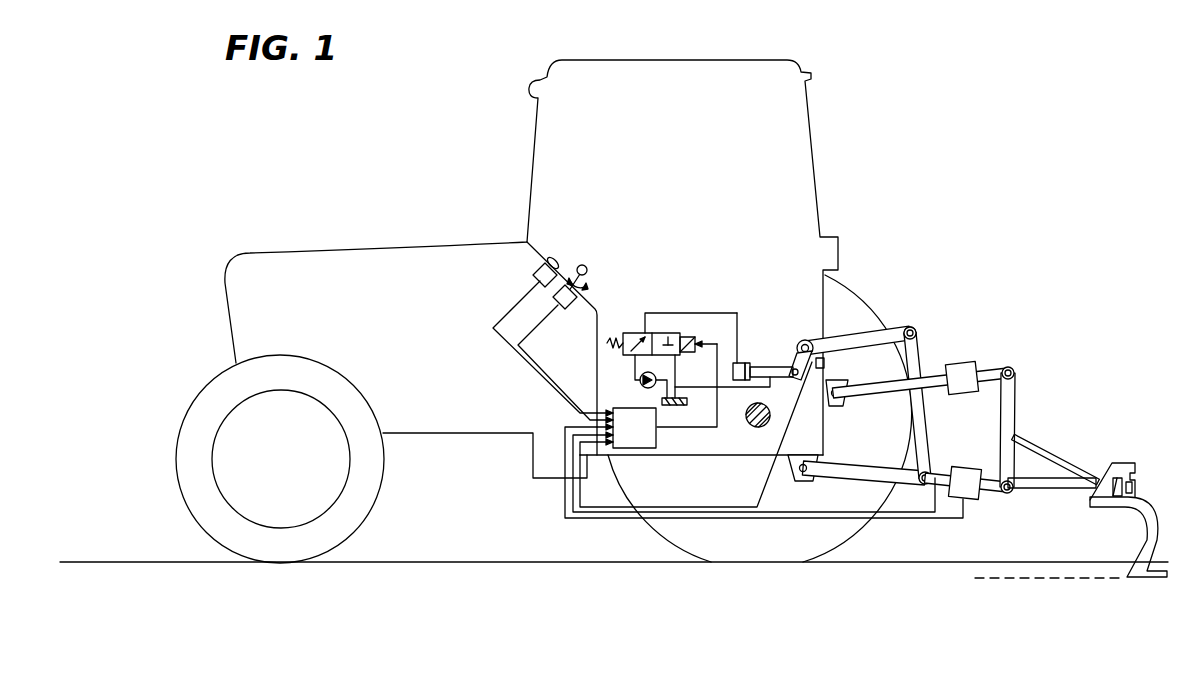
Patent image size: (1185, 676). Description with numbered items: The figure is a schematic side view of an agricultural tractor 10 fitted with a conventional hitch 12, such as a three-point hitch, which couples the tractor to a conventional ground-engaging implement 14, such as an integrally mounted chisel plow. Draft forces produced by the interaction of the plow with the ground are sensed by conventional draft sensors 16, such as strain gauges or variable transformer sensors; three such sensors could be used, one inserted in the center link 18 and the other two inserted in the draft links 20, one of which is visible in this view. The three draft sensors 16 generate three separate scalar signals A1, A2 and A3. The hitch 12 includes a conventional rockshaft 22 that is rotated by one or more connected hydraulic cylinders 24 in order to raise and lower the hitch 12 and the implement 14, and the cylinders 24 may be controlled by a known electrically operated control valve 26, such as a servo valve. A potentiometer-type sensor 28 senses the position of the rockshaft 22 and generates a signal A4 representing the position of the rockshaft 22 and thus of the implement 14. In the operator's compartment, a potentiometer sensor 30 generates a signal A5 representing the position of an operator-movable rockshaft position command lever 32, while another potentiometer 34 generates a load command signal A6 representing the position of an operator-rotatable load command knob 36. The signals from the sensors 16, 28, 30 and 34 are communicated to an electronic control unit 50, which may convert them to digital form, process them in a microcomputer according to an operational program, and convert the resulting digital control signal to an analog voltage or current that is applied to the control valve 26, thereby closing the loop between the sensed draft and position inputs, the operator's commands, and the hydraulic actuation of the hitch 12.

The agricultural tractor 10 is at (312, 142).
The hitch 12 is at (903, 292).
The ground-engaging implement 14 is at (1128, 506).
The draft sensors 16 is at (962, 395).
The center link 18 is at (994, 366).
The draft links 20 is at (856, 482).
The rockshaft 22 is at (799, 339).
The hydraulic cylinders 24 is at (751, 362).
The control valve 26 is at (631, 330).
The potentiometer-type sensor 28 is at (824, 367).
The potentiometer sensor 30 is at (576, 303).
The rockshaft position command lever 32 is at (588, 268).
The potentiometer 34 is at (534, 271).
The load command knob 36 is at (557, 261).
The electronic control unit 50 is at (658, 440).
The draft sensor signal A1 is at (764, 483).
The draft sensor signal A2 is at (588, 448).
The draft sensor signal A3 is at (754, 473).
The rockshaft position signal A4 is at (782, 392).
The lever position signal A5 is at (557, 362).
The load command signal A6 is at (545, 347).